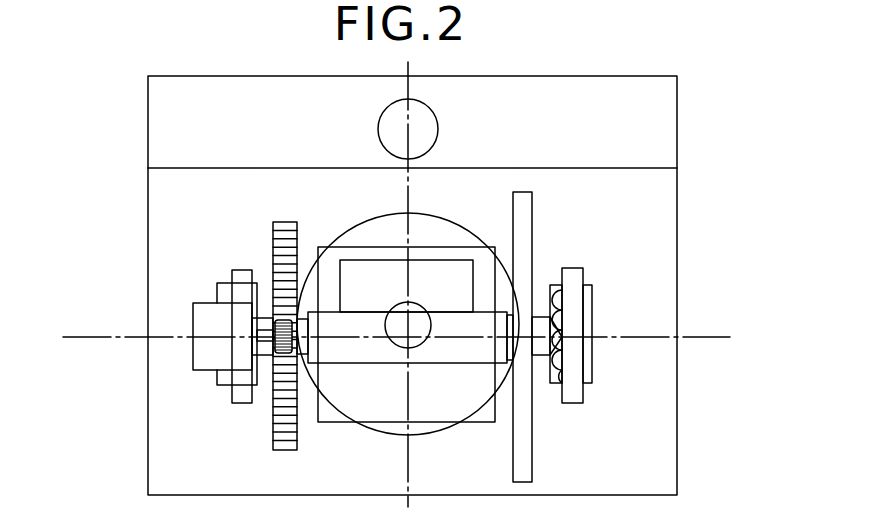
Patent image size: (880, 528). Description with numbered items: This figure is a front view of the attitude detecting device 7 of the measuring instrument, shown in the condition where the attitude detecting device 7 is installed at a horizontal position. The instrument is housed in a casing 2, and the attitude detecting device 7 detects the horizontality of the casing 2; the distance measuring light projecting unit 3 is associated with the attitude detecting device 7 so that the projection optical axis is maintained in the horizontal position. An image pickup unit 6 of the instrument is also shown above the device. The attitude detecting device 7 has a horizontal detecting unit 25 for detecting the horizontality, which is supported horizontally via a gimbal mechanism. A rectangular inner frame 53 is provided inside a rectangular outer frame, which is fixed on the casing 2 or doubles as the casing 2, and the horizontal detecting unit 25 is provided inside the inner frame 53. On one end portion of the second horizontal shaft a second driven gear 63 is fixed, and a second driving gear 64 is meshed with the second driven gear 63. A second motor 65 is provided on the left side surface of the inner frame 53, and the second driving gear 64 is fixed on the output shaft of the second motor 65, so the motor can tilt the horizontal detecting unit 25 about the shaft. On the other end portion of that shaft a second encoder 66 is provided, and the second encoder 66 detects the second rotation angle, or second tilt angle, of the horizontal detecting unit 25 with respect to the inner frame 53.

The casing 2 is at (677, 259).
The distance measuring light projecting unit 3 is at (455, 221).
The image pickup unit 6 is at (430, 110).
The attitude detecting device 7 is at (161, 213).
The horizontal detecting unit 25 is at (372, 246).
The inner frame 53 is at (236, 268).
The second driven gear 63 is at (283, 450).
The second driving gear 64 is at (283, 357).
The second motor 65 is at (202, 372).
The second encoder 66 is at (535, 225).